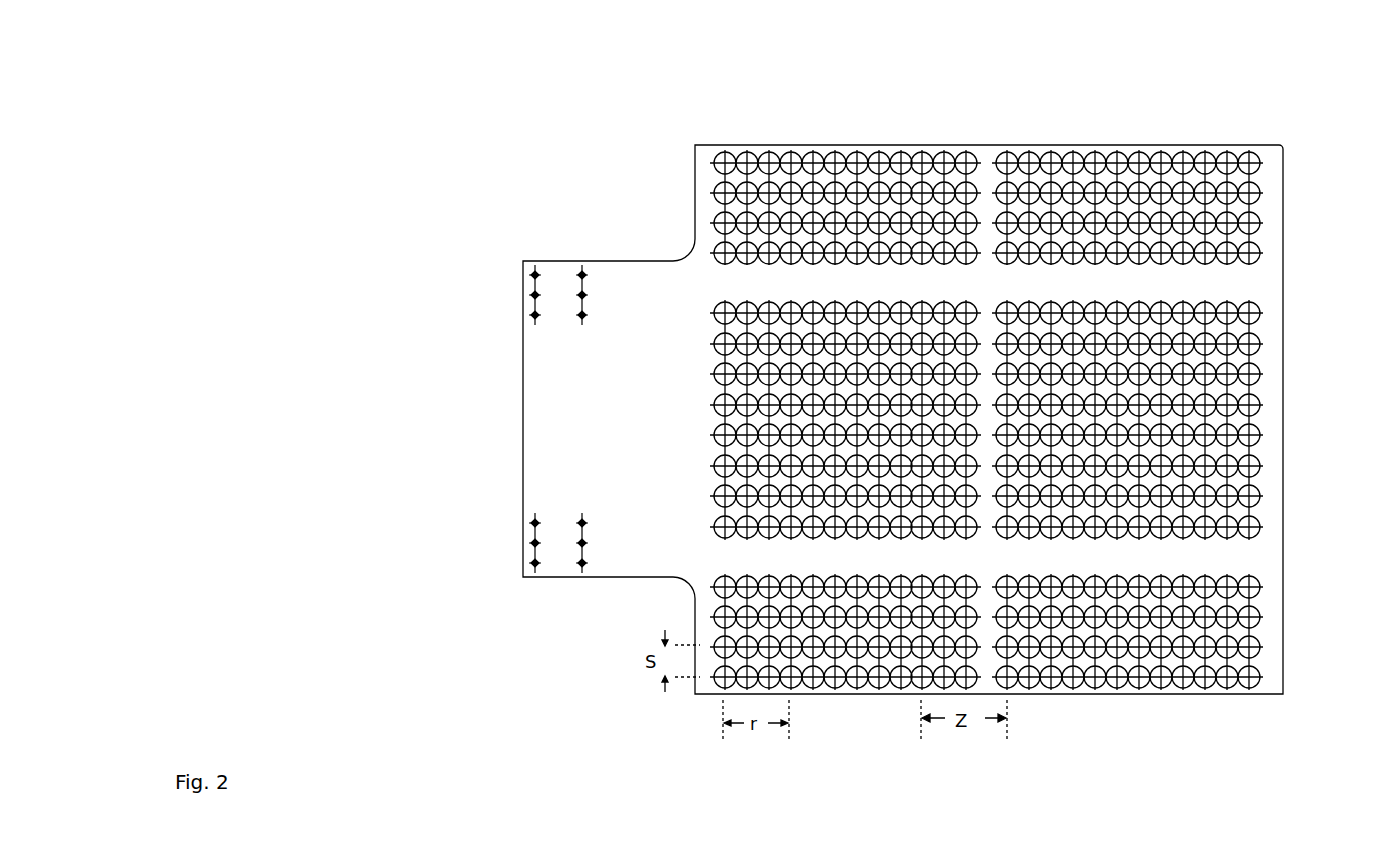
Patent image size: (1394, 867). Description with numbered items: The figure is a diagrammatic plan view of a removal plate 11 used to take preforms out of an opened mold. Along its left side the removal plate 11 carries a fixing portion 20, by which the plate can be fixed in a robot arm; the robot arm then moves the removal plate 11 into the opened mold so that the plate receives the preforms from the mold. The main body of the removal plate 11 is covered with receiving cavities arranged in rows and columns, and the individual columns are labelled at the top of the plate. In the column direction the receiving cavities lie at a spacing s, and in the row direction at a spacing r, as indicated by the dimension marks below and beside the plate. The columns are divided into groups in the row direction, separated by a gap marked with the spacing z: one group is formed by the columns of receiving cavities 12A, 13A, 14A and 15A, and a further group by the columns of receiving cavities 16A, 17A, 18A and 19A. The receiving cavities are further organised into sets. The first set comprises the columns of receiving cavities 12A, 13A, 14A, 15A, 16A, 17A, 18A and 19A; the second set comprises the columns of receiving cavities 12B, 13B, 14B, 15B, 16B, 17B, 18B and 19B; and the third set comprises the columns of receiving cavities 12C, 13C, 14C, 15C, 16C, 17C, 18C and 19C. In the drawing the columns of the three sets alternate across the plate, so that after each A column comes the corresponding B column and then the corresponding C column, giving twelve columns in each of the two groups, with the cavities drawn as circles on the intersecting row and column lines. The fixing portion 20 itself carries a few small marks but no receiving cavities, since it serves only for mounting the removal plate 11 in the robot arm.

The removal plate 11 is at (1329, 420).
The fixing portion 20 is at (521, 428).
The column of receiving cavities 12A is at (717, 145).
The column of receiving cavities 12B is at (749, 145).
The column of receiving cavities 12C is at (774, 145).
The column of receiving cavities 13A is at (792, 145).
The column of receiving cavities 13B is at (809, 145).
The column of receiving cavities 13C is at (836, 145).
The column of receiving cavities 14A is at (858, 145).
The column of receiving cavities 14B is at (880, 145).
The column of receiving cavities 14C is at (900, 145).
The column of receiving cavities 15A is at (921, 145).
The column of receiving cavities 15B is at (947, 145).
The column of receiving cavities 15C is at (967, 145).
The column of receiving cavities 16A is at (1006, 145).
The column of receiving cavities 16B is at (1032, 145).
The column of receiving cavities 16C is at (1055, 145).
The column of receiving cavities 17A is at (1073, 145).
The column of receiving cavities 17B is at (1090, 145).
The column of receiving cavities 17C is at (1115, 145).
The column of receiving cavities 18A is at (1140, 145).
The column of receiving cavities 18B is at (1157, 145).
The column of receiving cavities 18C is at (1182, 145).
The column of receiving cavities 19A is at (1201, 145).
The column of receiving cavities 19B is at (1225, 145).
The column of receiving cavities 19C is at (1250, 145).